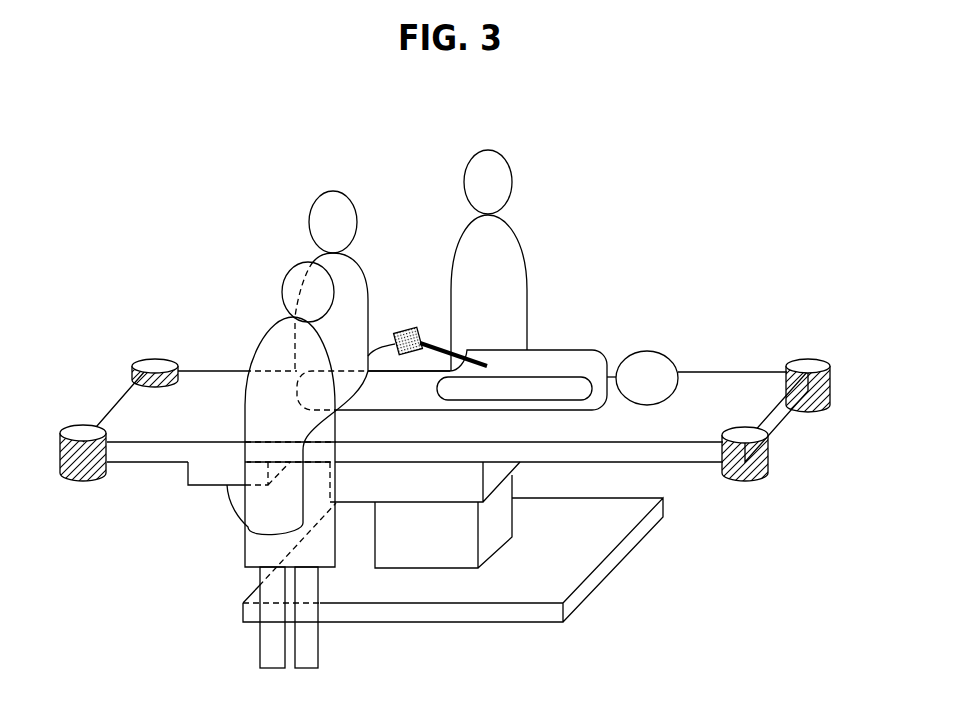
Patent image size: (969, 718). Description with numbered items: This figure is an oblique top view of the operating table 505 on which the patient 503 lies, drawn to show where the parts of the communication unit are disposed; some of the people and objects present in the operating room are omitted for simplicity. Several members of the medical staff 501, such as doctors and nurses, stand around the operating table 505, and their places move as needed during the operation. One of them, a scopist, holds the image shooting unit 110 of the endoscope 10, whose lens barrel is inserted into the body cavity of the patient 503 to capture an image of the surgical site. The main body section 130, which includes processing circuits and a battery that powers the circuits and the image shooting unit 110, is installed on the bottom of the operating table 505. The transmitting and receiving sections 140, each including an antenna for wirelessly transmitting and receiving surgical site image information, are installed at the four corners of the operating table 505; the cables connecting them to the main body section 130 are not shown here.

The endoscope 10 is at (688, 245).
The image shooting unit 110 is at (410, 328).
The main body section 130 is at (197, 487).
The transmitting and receiving sections 140 is at (155, 358).
The medical staff 501 is at (285, 278).
The patient 503 is at (573, 350).
The operating table 505 is at (748, 371).